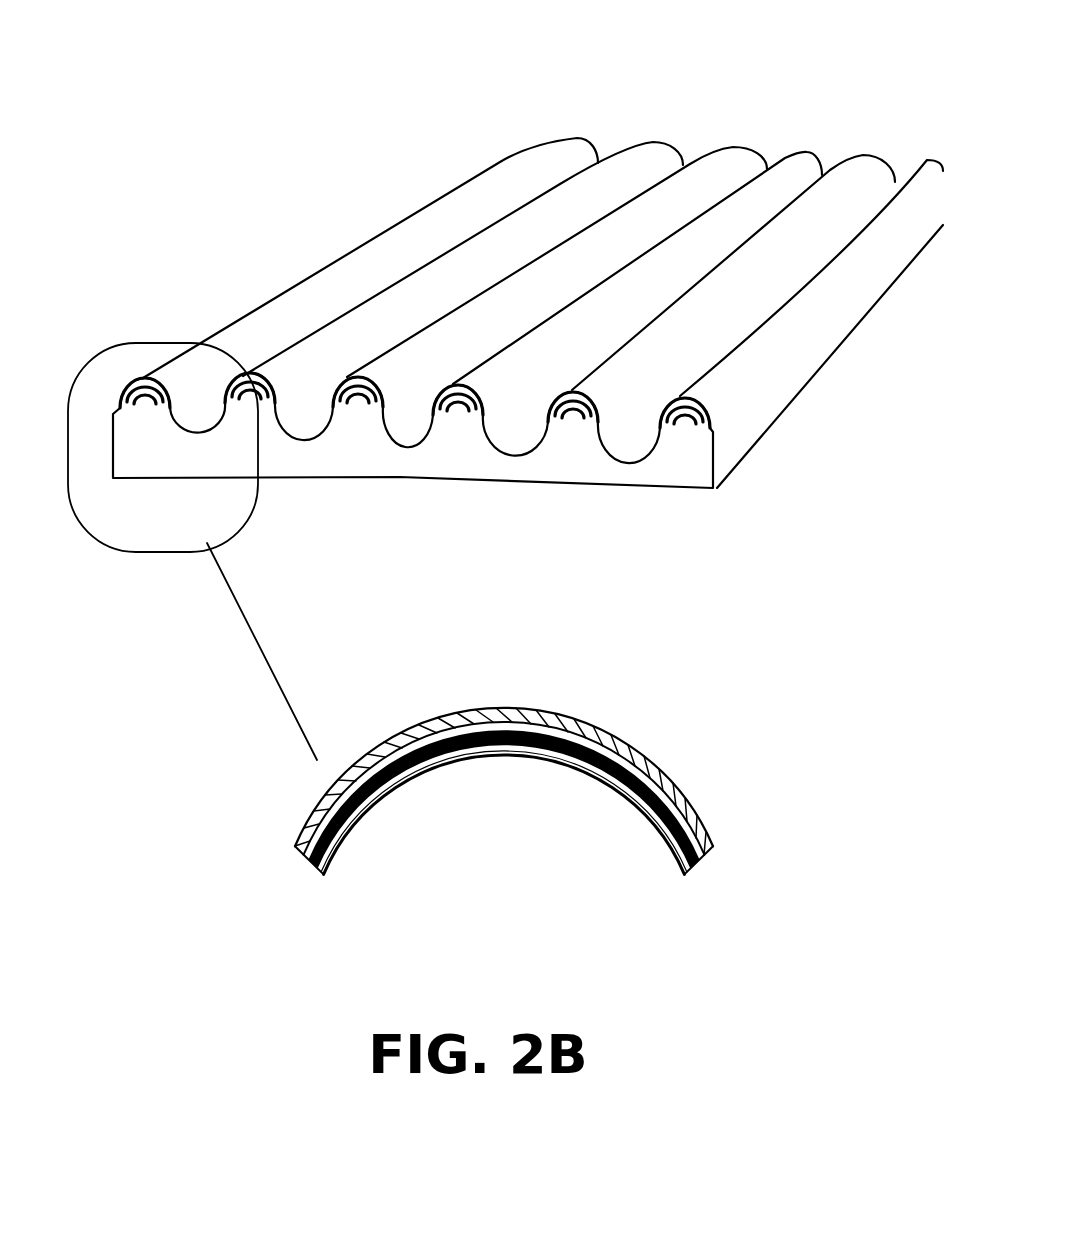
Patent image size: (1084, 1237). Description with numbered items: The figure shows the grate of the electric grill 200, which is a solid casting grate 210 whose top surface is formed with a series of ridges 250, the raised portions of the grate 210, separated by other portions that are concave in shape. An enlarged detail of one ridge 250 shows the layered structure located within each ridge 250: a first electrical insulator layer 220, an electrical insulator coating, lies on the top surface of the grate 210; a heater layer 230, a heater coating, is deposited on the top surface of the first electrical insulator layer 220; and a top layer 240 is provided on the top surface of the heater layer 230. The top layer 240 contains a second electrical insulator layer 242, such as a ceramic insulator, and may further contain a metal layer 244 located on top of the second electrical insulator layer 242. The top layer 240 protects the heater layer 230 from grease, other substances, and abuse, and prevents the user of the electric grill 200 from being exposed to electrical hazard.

The electric grill 200 is at (195, 738).
The solid casting grate 210 is at (636, 465).
The first electrical insulator layer 220 is at (643, 833).
The heater layer 230 is at (604, 797).
The top layer 240 is at (292, 848).
The second electrical insulator layer 242 is at (566, 770).
The metal layer 244 is at (690, 795).
The ridges 250 is at (577, 130).